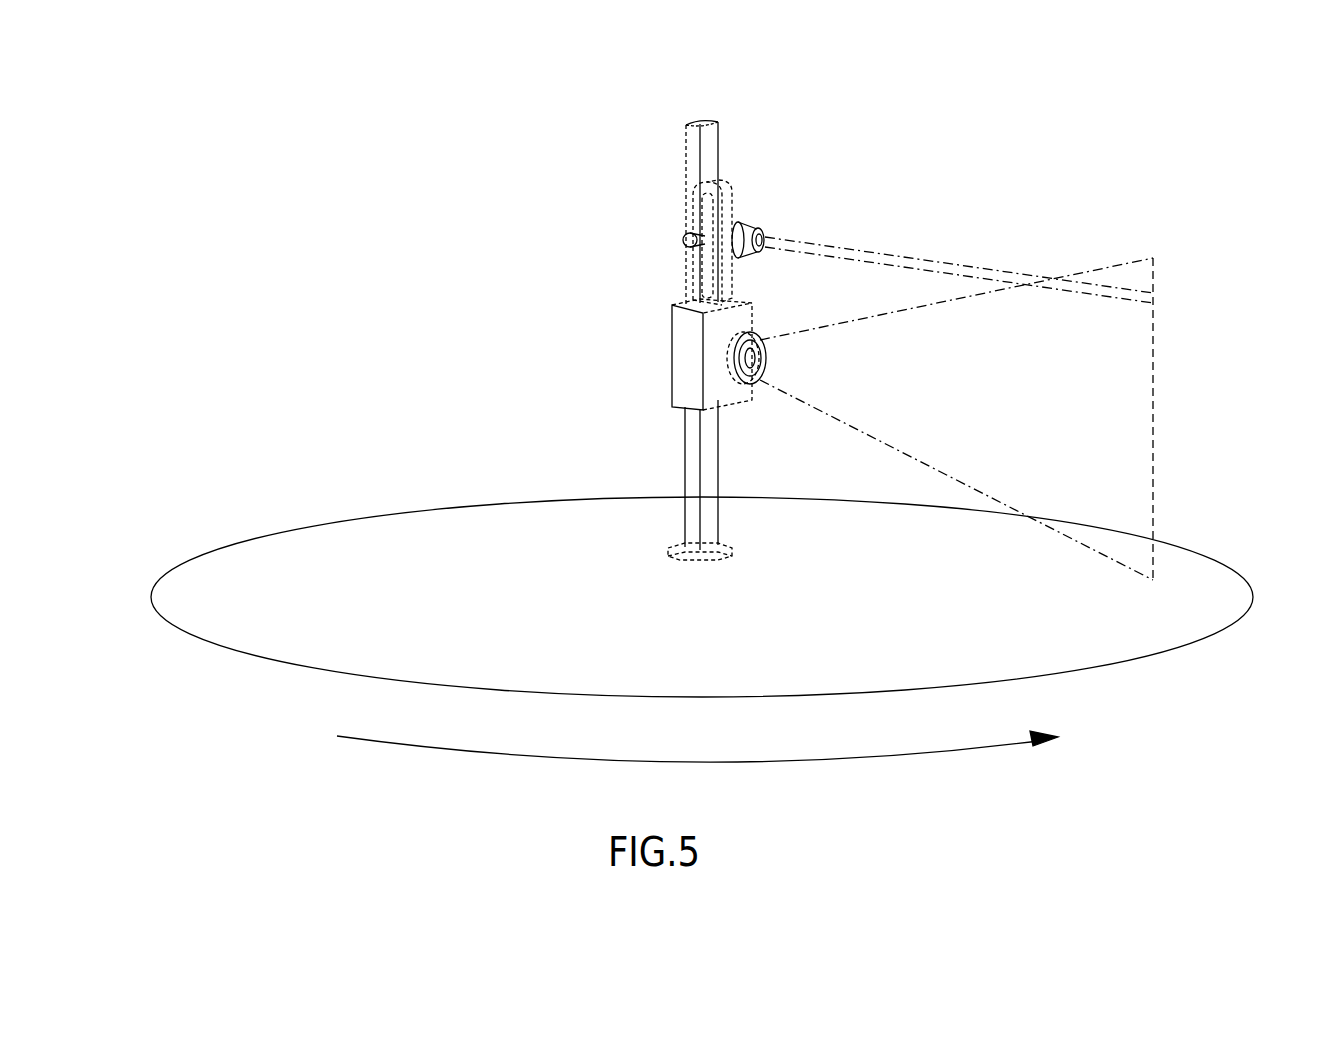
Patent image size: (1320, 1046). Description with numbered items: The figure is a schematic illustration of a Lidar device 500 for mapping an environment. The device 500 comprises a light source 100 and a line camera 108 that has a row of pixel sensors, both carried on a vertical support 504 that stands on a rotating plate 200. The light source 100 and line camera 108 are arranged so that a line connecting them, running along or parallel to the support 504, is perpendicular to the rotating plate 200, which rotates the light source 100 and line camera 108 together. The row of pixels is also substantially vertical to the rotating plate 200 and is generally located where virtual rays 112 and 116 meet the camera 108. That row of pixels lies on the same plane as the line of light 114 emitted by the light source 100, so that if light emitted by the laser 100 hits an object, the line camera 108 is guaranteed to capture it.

The Lidar device 500 is at (870, 104).
The support 504 is at (710, 141).
The light source 100 is at (736, 216).
The line camera 108 is at (745, 318).
The line of light 114 is at (898, 253).
The virtual ray 112 is at (955, 297).
The virtual ray 116 is at (845, 423).
The rotating plate 200 is at (1190, 615).